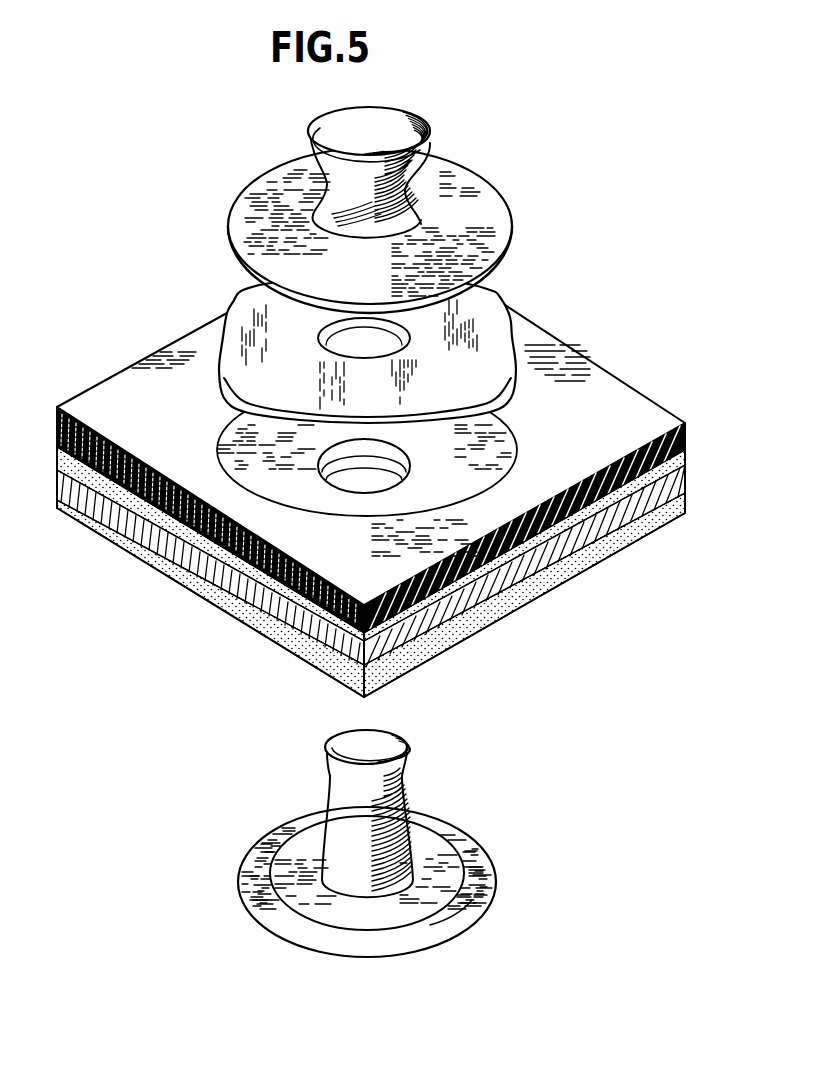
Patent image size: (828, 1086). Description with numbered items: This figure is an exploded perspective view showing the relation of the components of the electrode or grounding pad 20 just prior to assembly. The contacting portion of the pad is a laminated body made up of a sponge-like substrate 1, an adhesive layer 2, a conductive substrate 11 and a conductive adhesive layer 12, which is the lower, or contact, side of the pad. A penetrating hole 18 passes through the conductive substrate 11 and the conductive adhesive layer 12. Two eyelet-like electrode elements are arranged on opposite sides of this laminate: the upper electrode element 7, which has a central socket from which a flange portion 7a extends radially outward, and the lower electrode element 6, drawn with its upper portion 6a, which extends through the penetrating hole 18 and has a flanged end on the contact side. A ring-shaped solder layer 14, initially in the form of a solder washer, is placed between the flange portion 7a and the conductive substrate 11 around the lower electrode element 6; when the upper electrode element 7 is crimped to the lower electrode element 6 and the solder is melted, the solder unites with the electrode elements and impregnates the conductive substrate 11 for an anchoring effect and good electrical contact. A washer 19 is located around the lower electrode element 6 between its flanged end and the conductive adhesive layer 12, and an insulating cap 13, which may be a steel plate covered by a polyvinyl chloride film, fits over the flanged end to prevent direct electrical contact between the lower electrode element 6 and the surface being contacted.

The sponge-like substrate 1 is at (687, 433).
The adhesive layer 2 is at (688, 462).
The conductive substrate 11 is at (690, 484).
The conductive adhesive layer 12 is at (688, 508).
The electrode or grounding pad 20 is at (184, 316).
The penetrating hole 18 is at (332, 457).
The ring-shaped solder layer 14 is at (480, 313).
The upper electrode element 7 is at (378, 120).
The flange portion 7a is at (468, 202).
The lower electrode element 6 is at (413, 824).
The stud head 6a is at (374, 738).
The insulating cap 13 is at (472, 852).
The washer 19 is at (430, 887).